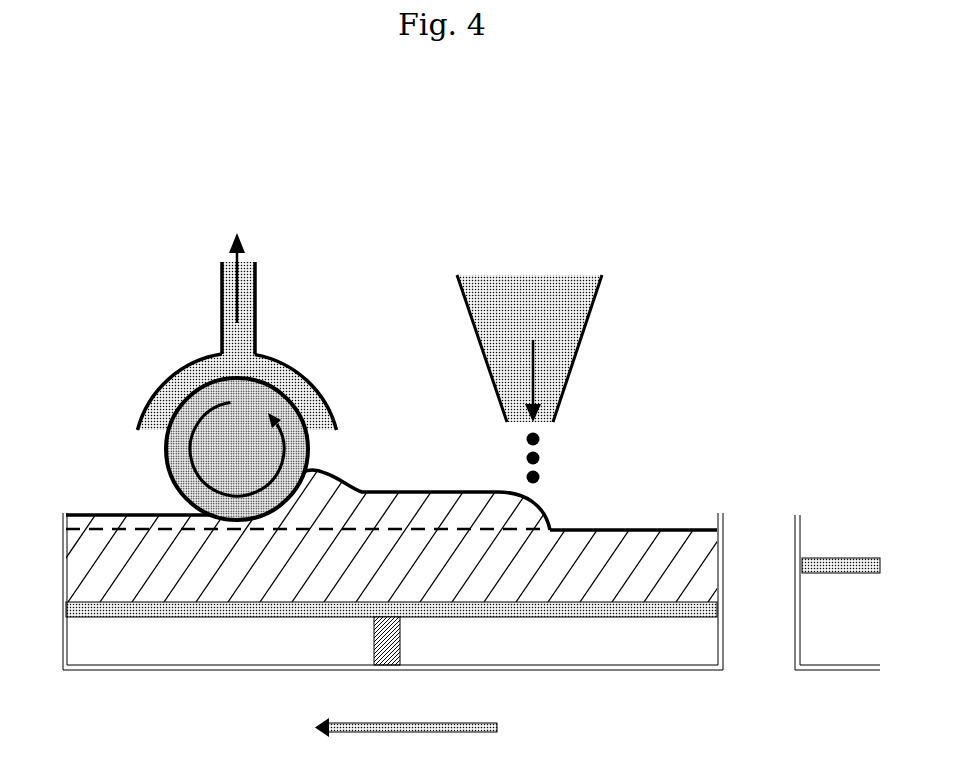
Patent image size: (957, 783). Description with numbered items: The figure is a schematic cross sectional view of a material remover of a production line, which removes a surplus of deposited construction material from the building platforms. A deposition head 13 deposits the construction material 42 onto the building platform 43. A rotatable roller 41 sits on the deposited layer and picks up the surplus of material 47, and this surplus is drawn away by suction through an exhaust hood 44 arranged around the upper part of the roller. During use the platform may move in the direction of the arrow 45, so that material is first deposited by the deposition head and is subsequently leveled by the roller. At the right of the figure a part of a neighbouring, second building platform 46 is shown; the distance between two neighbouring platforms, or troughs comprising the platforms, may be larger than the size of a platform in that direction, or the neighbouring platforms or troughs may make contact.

The deposition head 13 is at (605, 298).
The roller 41 is at (157, 450).
The construction material 42 is at (606, 521).
The building platform 43 is at (618, 630).
The exhaust hood 44 is at (264, 305).
The arrow 45 is at (402, 742).
The second building platform 46 is at (834, 547).
The surplus of material 47 is at (365, 478).